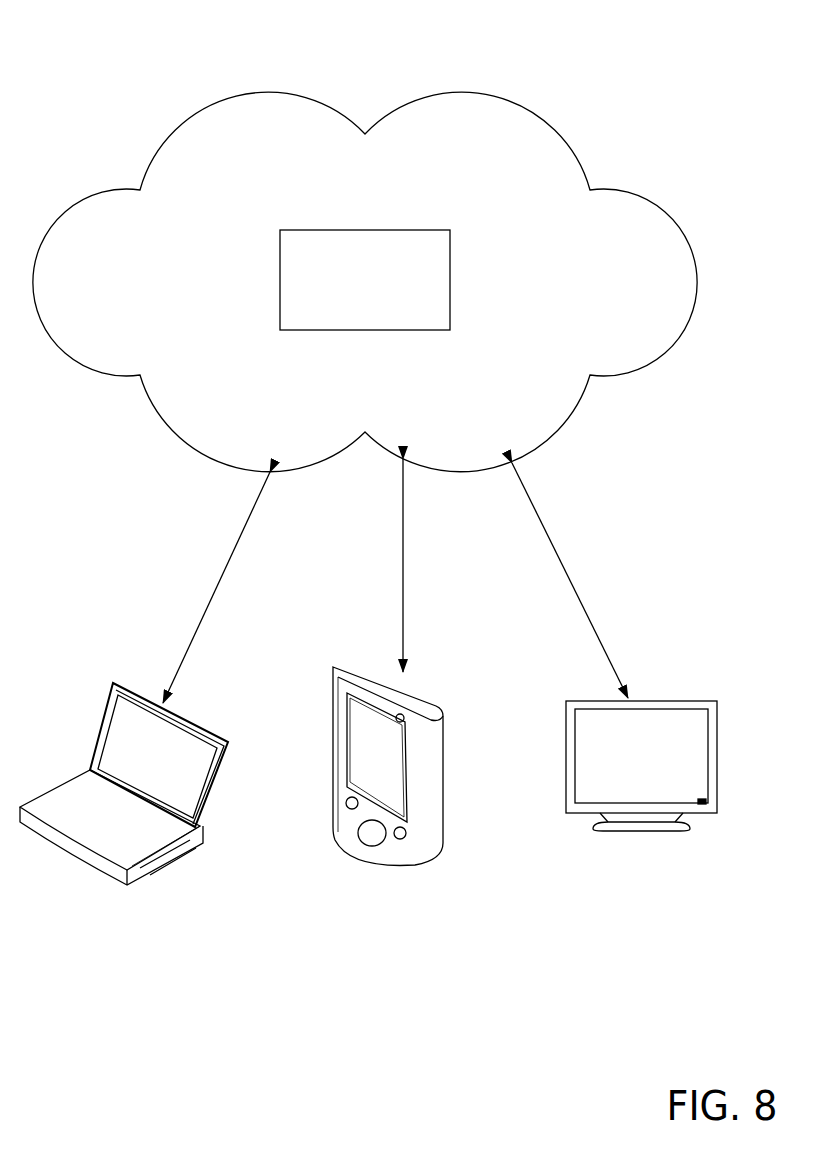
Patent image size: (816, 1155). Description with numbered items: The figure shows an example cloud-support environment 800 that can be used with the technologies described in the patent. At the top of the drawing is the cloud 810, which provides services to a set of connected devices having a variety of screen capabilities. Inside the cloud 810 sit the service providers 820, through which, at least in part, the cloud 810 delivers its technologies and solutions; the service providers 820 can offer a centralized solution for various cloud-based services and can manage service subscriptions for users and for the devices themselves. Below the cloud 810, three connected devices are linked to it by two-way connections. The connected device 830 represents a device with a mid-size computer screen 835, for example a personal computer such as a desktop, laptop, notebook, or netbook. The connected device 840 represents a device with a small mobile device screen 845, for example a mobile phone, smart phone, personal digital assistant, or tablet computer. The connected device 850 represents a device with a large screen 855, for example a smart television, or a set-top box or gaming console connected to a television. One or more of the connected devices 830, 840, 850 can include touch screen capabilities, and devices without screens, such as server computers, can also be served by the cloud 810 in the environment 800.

The example environment 800 is at (653, 88).
The cloud 810 is at (365, 281).
The service providers 820 is at (365, 280).
The connected device 830 is at (28, 802).
The computer screen 835 is at (138, 767).
The connected device 840 is at (338, 666).
The mobile device screen 845 is at (360, 770).
The connected device 850 is at (663, 701).
The large screen 855 is at (625, 768).